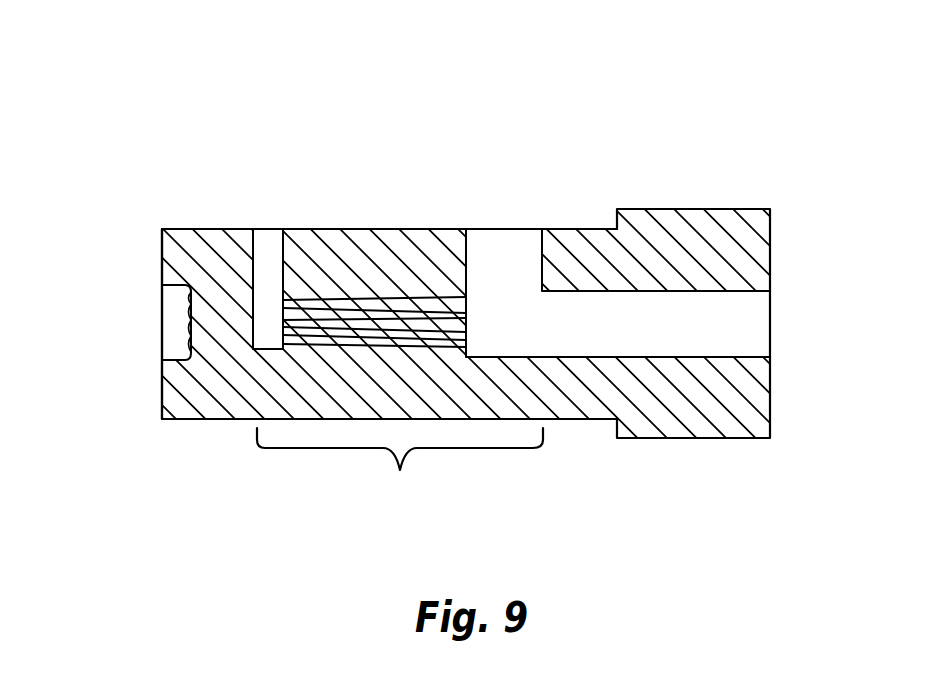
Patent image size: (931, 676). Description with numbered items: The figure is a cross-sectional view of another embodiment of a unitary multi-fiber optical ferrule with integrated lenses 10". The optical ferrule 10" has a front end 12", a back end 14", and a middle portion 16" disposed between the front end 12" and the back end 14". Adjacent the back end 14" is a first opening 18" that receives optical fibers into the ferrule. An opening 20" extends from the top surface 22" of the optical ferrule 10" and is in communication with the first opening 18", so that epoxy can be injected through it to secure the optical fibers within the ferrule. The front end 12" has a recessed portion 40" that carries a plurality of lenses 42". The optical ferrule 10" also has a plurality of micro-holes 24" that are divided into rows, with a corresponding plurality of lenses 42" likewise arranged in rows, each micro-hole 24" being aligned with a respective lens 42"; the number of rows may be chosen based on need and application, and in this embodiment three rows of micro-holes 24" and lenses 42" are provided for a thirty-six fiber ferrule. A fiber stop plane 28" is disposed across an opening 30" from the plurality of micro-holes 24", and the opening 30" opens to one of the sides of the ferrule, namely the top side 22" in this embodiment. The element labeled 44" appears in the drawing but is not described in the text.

The unitary multi-fiber optical ferrule with integrated lenses 10 is at (600, 139).
The front end 12 is at (162, 248).
The back end 14 is at (771, 237).
The middle portion 16 is at (400, 469).
The first opening 18 is at (758, 318).
The opening 20 is at (513, 229).
The top surface 22 is at (358, 229).
The micro-holes 24 is at (382, 345).
The fiber stop plane 28 is at (259, 237).
The opening 30 is at (277, 240).
The recessed portion 40 is at (178, 354).
The lenses 42 is at (191, 303).
The end face 44 is at (161, 387).